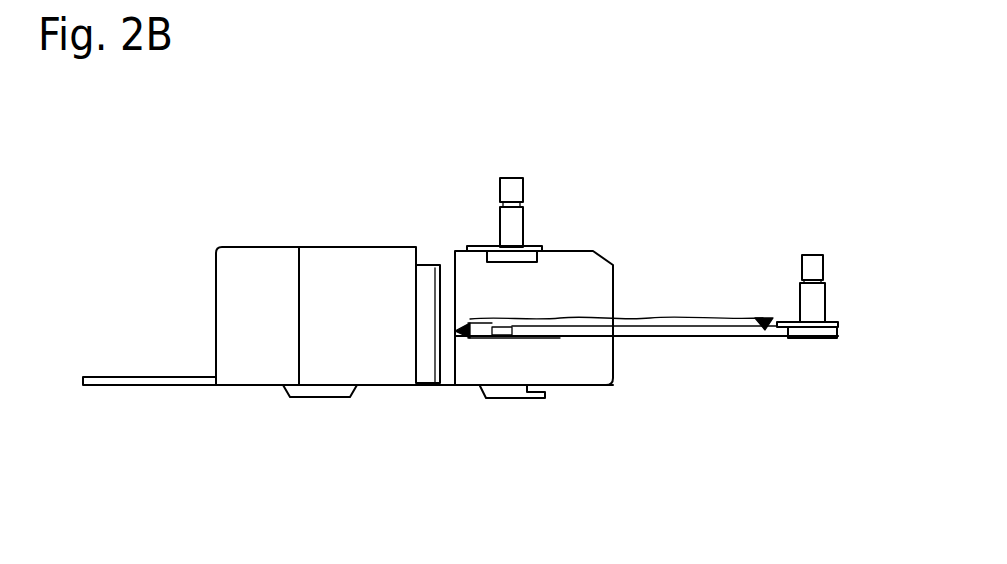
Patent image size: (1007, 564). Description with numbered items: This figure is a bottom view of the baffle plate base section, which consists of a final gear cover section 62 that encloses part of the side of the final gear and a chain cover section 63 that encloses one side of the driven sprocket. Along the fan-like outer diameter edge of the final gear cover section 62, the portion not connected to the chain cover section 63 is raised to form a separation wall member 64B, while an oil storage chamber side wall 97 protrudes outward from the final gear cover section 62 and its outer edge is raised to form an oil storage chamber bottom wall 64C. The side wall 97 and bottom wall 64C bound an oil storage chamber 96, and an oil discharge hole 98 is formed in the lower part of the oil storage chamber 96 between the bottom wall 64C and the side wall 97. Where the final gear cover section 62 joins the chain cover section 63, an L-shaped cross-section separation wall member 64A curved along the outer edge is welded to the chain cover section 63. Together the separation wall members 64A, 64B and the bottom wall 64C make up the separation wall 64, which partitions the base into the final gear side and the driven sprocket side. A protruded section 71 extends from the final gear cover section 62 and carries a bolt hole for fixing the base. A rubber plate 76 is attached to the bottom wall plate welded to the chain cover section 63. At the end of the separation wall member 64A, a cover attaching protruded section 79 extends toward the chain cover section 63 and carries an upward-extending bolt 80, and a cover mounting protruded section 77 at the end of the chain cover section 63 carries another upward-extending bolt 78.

The final gear cover section 62 is at (248, 387).
The chain cover section 63 is at (651, 338).
The separation wall 64 is at (429, 243).
The separation wall member 64A is at (570, 257).
The separation wall member 64B is at (257, 247).
The oil storage chamber bottom wall 64C is at (382, 247).
The protruded section 71 is at (502, 398).
The rubber plate 76 is at (640, 318).
The cover mounting protruded section 77 is at (838, 325).
The bolt 78 is at (815, 263).
The cover attaching protruded section 79 is at (532, 247).
The bolt 80 is at (510, 190).
The oil storage chamber 96 is at (365, 358).
The oil storage chamber side wall 97 is at (425, 387).
The oil discharge hole 98 is at (416, 275).